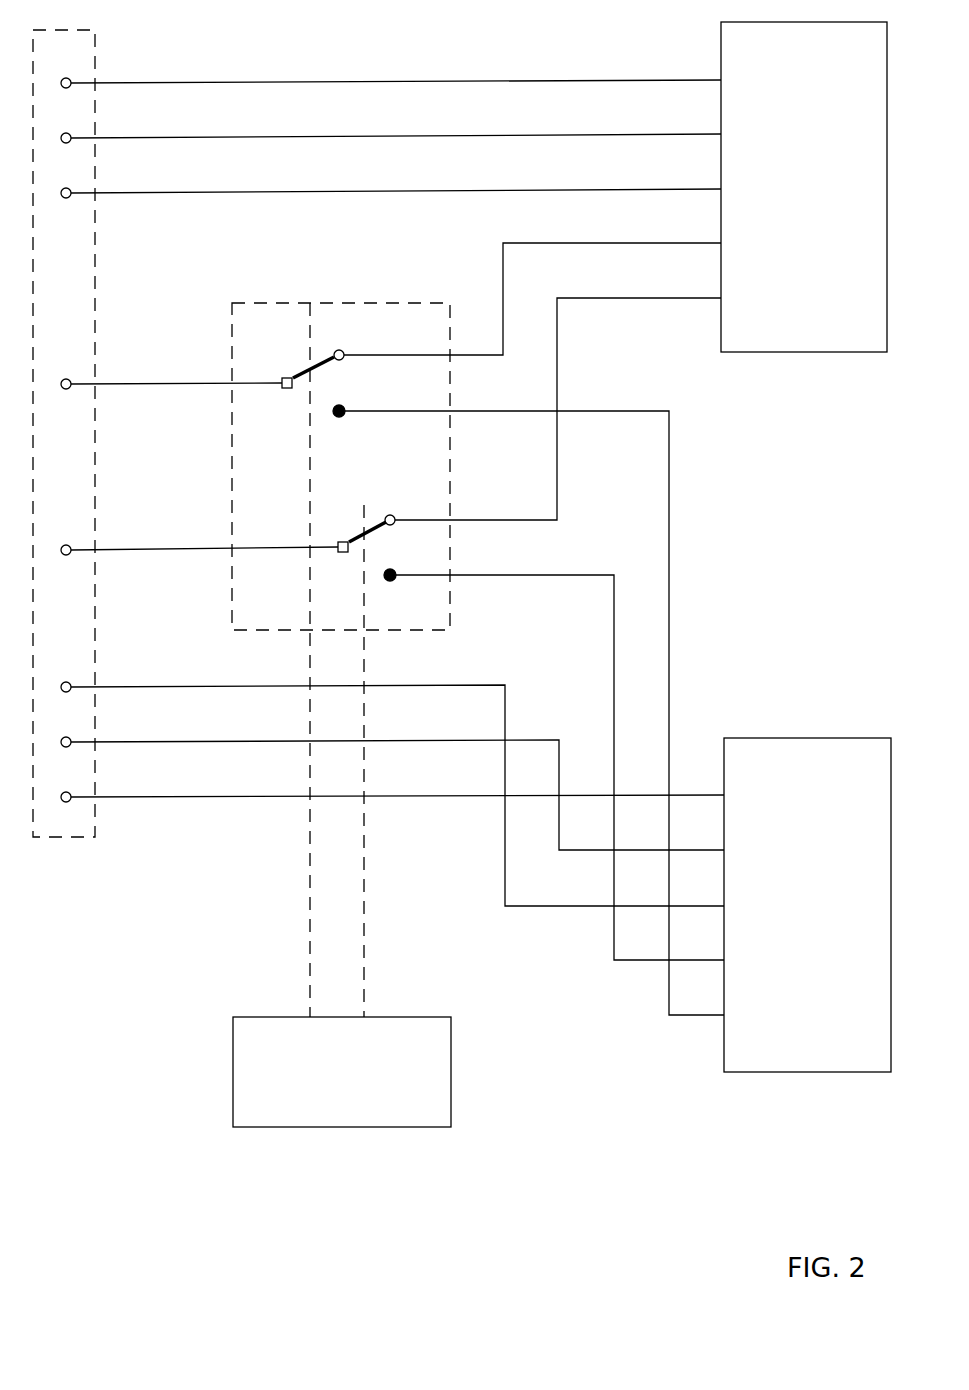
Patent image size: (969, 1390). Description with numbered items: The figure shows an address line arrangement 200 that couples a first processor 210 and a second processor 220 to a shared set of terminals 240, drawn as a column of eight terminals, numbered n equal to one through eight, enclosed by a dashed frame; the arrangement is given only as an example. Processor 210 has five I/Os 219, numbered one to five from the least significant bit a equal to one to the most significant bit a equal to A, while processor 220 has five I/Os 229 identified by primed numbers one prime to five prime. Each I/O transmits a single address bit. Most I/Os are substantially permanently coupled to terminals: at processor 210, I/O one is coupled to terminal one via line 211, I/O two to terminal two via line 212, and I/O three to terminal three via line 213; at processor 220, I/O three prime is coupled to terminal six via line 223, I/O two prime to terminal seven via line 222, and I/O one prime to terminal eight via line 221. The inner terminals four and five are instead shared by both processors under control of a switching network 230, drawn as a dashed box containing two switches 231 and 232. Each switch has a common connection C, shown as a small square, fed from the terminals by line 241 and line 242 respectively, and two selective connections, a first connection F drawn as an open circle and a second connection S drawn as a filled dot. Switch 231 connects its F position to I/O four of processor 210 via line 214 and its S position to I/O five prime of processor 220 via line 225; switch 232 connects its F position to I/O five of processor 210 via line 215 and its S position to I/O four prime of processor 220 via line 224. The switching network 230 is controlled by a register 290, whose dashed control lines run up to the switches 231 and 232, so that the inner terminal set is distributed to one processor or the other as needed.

The address line arrangement 200 is at (449, 1284).
The first processor 210 is at (875, 54).
The line 211 is at (582, 79).
The line 212 is at (582, 134).
The line 213 is at (582, 189).
The line 214 is at (582, 243).
The line 215 is at (582, 298).
The I/Os of processor 210 219 is at (719, 79).
The second processor 220 is at (875, 770).
The line 221 is at (450, 795).
The line 222 is at (450, 740).
The line 223 is at (450, 685).
The line 224 is at (584, 573).
The line 225 is at (650, 409).
The I/Os of processor 220 229 is at (723, 795).
The switching network 230 is at (448, 330).
The switch 231 is at (307, 370).
The switch 232 is at (363, 535).
The terminals 240 is at (78, 56).
The line 241 is at (193, 387).
The line 242 is at (193, 552).
The register 290 is at (447, 1017).